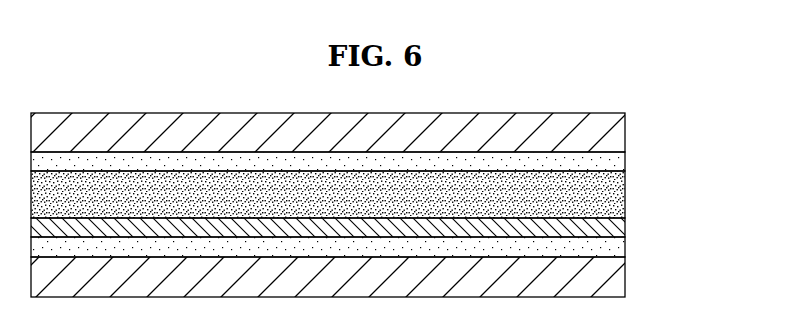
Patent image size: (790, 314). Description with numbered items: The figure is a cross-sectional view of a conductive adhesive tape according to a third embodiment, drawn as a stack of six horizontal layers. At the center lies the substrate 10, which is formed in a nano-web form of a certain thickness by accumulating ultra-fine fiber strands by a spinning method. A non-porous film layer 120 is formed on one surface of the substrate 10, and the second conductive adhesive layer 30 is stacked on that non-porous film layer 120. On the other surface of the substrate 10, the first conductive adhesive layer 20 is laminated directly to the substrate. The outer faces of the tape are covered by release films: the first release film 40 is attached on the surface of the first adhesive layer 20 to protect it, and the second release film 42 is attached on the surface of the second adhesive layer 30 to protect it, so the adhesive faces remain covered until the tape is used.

The first release film 40 is at (615, 134).
The first conductive adhesive layer 20 is at (613, 160).
The substrate 10 is at (616, 179).
The non-porous film layer 120 is at (615, 226).
The second conductive adhesive layer 30 is at (613, 246).
The second release film 42 is at (615, 278).